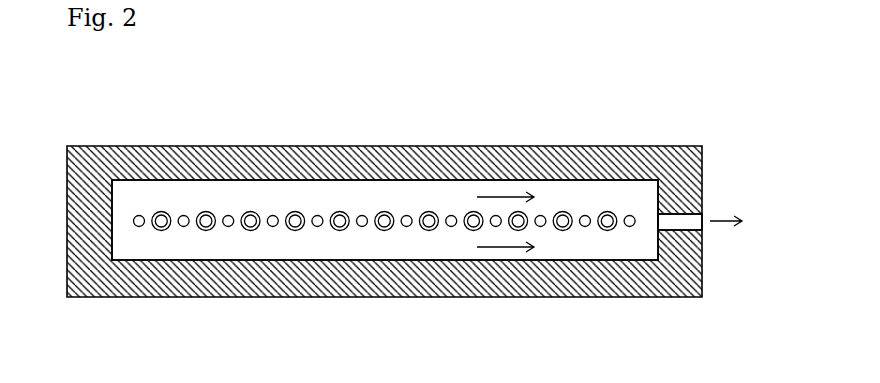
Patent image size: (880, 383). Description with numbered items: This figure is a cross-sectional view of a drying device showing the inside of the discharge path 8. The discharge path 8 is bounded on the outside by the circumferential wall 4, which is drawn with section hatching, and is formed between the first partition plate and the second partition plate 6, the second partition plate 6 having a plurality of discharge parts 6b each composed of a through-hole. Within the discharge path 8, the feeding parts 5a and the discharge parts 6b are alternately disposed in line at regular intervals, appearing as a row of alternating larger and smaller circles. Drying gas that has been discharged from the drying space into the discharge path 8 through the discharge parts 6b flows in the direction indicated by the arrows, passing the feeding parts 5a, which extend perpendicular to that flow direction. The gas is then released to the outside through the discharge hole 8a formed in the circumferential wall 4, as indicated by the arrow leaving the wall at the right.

The circumferential wall 4 is at (497, 158).
The second partition plate 6 is at (375, 193).
The discharge parts 6b is at (317, 215).
The feeding parts 5a is at (334, 231).
The discharge path 8 is at (636, 207).
The discharge hole 8a is at (690, 226).